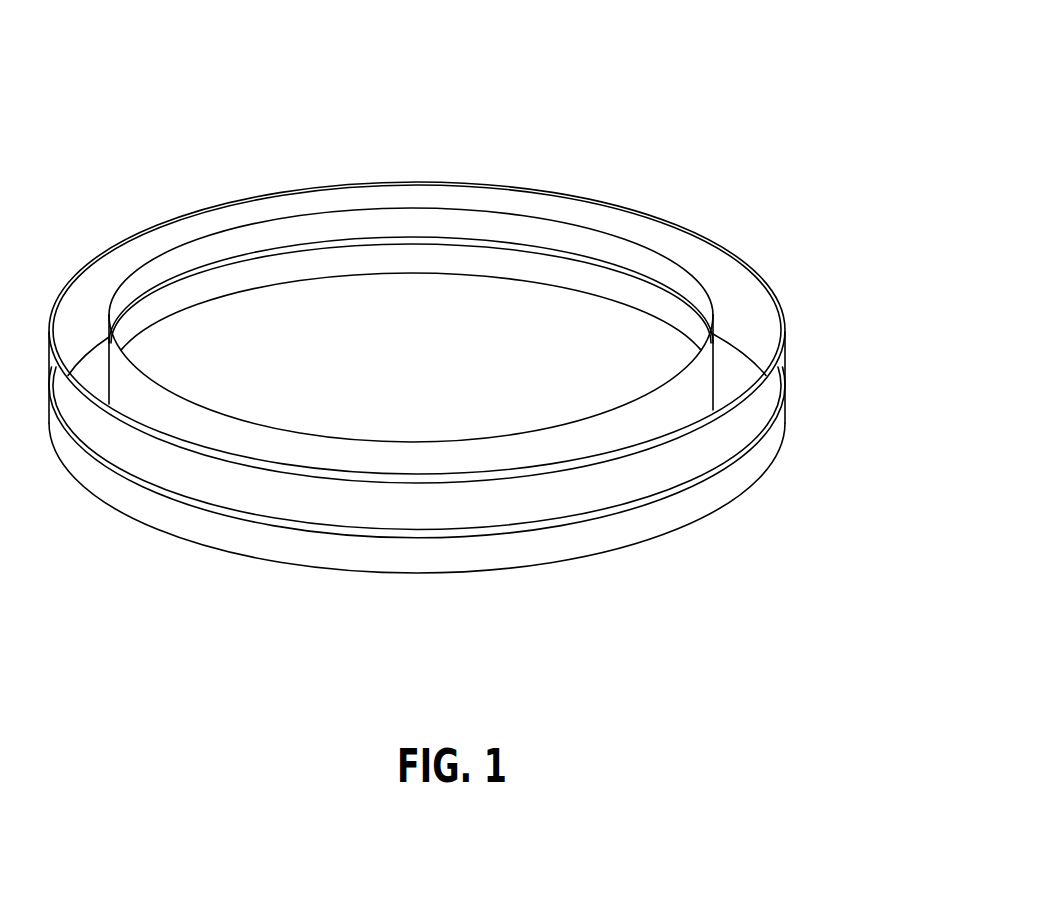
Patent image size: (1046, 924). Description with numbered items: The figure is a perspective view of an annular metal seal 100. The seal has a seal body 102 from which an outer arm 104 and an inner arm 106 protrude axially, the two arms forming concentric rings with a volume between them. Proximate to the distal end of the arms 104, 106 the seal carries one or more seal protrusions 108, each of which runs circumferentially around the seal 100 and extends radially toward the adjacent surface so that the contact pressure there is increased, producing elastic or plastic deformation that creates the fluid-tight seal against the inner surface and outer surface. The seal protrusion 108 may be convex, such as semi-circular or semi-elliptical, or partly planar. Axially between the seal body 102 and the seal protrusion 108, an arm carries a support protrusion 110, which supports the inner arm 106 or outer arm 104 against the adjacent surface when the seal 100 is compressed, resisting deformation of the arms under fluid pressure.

The annular metal seal 100 is at (462, 321).
The seal body 102 is at (536, 578).
The outer arm 104 is at (734, 256).
The inner arm 106 is at (510, 211).
The seal protrusion 108 is at (285, 216).
The support protrusion 110 is at (373, 238).